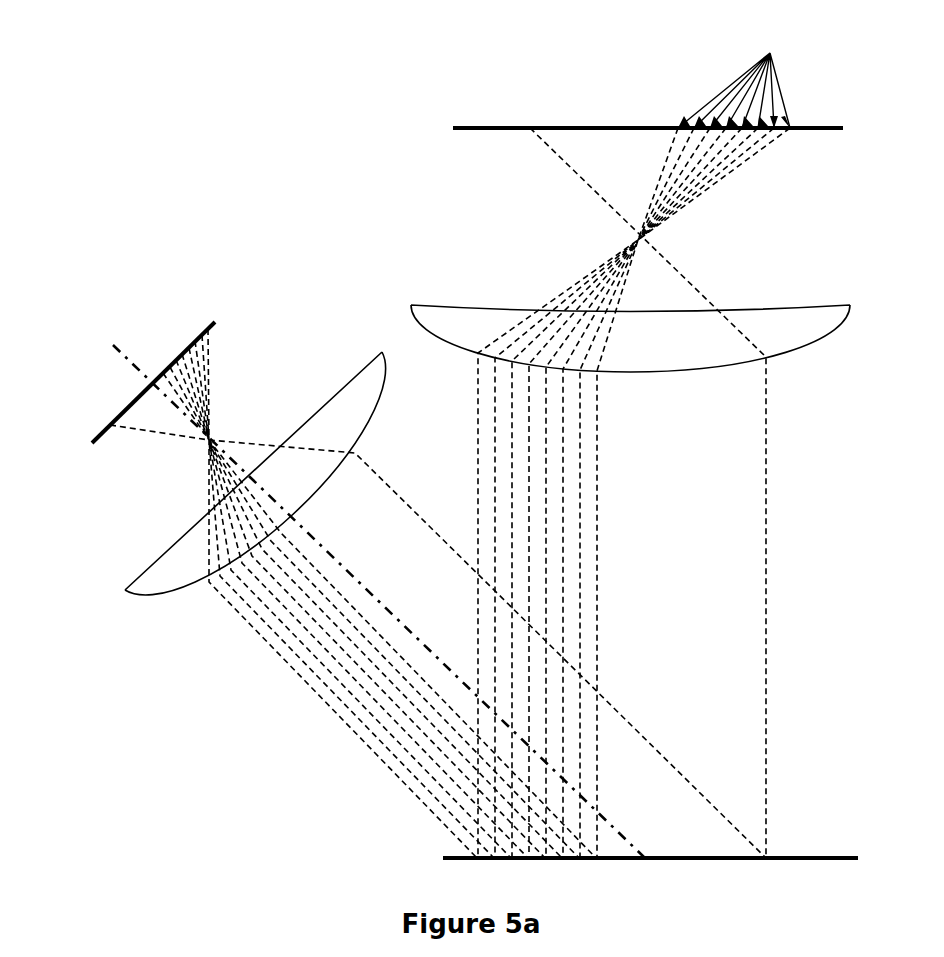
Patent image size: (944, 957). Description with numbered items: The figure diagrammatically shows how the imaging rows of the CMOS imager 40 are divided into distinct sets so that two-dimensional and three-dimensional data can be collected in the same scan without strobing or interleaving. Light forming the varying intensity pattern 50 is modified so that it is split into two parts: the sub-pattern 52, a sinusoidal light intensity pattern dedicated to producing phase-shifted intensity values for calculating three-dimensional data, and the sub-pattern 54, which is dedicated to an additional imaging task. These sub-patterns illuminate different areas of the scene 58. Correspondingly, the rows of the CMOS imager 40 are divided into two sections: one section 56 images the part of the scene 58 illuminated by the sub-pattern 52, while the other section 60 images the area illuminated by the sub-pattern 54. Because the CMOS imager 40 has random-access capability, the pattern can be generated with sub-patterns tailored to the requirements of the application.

The CMOS imager 40 is at (445, 128).
The varying intensity pattern 50 is at (217, 318).
The sub-pattern 52 is at (181, 333).
The sub-pattern 54 is at (98, 420).
The section 56 is at (639, 437).
The scene 58 is at (436, 852).
The section 60 is at (528, 128).